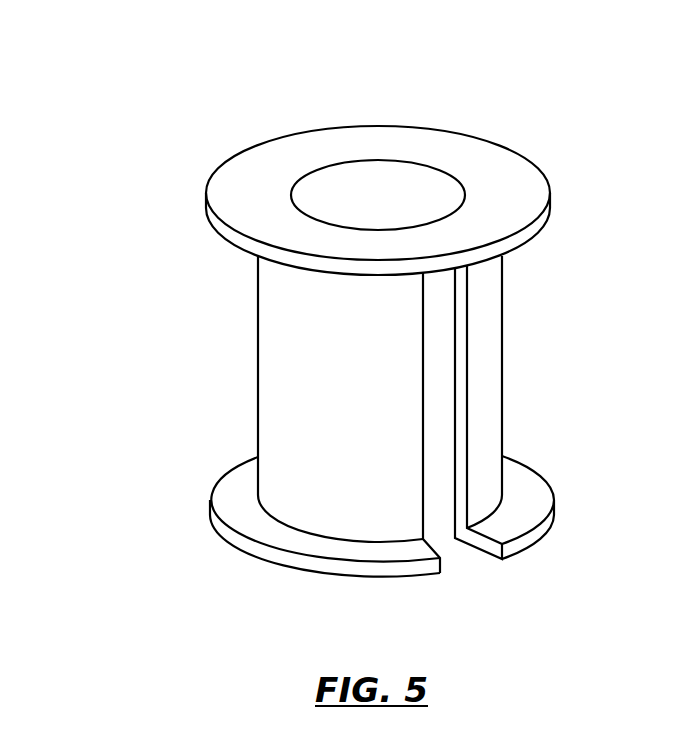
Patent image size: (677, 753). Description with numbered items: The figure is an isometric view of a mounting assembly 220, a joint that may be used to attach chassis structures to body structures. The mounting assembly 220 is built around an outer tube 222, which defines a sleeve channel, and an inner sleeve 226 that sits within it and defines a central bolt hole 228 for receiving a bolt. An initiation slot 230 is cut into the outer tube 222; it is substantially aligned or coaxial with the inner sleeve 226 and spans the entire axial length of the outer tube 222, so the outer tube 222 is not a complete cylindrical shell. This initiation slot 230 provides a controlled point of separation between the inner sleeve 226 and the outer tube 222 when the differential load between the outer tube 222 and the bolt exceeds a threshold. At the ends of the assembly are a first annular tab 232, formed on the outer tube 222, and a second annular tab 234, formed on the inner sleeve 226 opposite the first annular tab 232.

The mounting assembly 220 is at (570, 87).
The outer tube 222 is at (483, 348).
The inner sleeve 226 is at (268, 195).
The bolt hole 228 is at (324, 196).
The initiation slot 230 is at (420, 303).
The first annular tab 232 is at (528, 537).
The second annular tab 234 is at (550, 207).